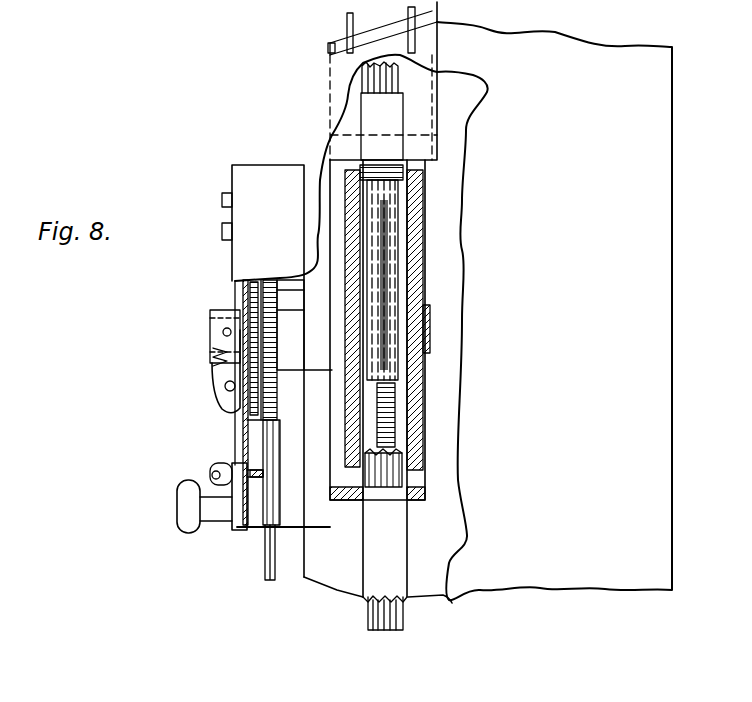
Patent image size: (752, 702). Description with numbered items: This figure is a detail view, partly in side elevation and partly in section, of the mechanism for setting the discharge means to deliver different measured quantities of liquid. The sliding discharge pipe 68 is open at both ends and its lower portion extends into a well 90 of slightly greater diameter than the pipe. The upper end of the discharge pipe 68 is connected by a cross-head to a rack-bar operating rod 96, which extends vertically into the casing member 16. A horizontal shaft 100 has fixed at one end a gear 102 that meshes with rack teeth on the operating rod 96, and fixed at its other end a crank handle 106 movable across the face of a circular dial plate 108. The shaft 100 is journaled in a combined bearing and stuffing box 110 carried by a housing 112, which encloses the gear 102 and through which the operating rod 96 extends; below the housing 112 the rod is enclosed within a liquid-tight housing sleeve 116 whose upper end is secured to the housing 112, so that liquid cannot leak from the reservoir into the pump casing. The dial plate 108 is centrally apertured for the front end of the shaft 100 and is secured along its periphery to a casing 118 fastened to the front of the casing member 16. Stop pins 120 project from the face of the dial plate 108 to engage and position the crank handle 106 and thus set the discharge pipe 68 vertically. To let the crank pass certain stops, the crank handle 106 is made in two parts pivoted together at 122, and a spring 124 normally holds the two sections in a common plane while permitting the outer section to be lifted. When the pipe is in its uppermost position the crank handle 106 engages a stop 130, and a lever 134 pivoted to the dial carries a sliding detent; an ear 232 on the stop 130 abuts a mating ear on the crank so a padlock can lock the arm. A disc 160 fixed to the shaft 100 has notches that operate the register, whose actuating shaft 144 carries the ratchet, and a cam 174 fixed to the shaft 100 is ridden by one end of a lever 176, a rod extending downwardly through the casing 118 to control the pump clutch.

The casing member 16 is at (655, 433).
The discharge pipe 68 is at (347, 25).
The well 90 is at (330, 45).
The rack-bar operating rod 96 is at (400, 77).
The actuating shaft of register 144 is at (400, 135).
The stop pins 120 is at (207, 216).
The horizontal shaft 100 is at (293, 320).
The combined bearing and stuffing box 110 is at (256, 306).
The disc 160 is at (236, 345).
The spring 124 is at (220, 366).
The pivot 122 is at (226, 388).
The cam 174 is at (268, 417).
The dial plate 108 is at (246, 446).
The lever 134 is at (222, 465).
The ear 232 is at (212, 476).
The crank handle 106 is at (196, 512).
The stop 130 is at (230, 488).
The casing 118 is at (272, 533).
The lever 176 is at (274, 570).
The gear 102 is at (393, 421).
The housing 112 is at (418, 457).
The housing sleeve 116 is at (390, 533).